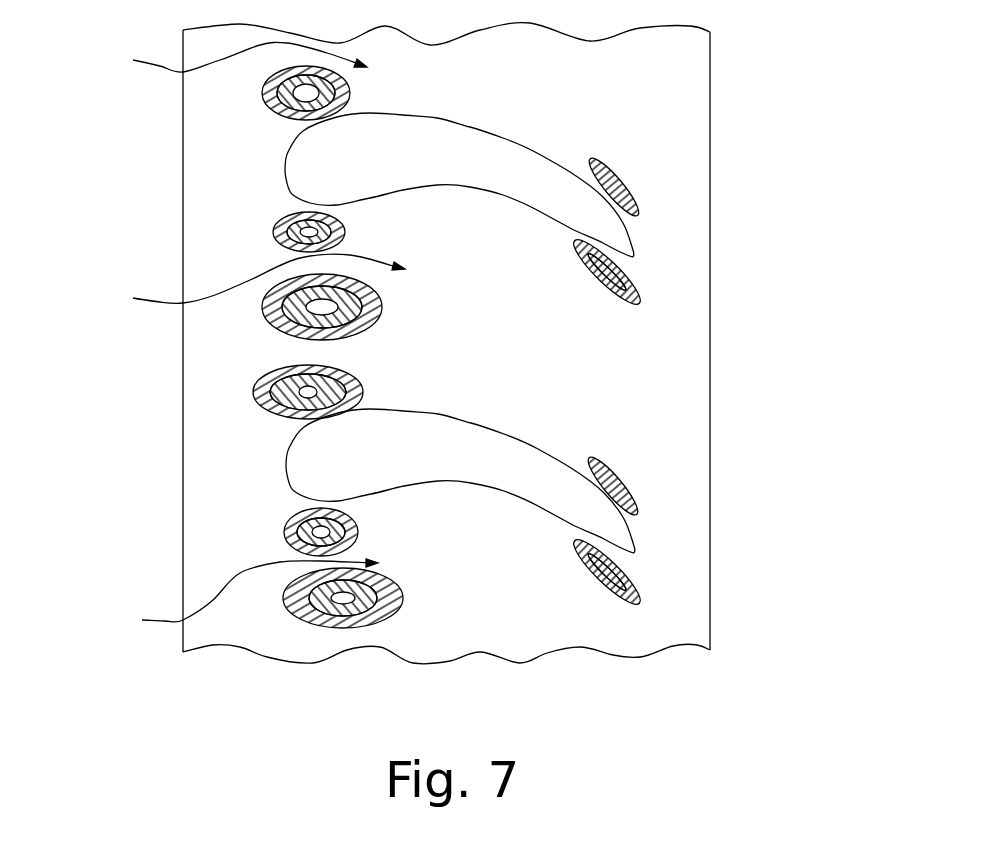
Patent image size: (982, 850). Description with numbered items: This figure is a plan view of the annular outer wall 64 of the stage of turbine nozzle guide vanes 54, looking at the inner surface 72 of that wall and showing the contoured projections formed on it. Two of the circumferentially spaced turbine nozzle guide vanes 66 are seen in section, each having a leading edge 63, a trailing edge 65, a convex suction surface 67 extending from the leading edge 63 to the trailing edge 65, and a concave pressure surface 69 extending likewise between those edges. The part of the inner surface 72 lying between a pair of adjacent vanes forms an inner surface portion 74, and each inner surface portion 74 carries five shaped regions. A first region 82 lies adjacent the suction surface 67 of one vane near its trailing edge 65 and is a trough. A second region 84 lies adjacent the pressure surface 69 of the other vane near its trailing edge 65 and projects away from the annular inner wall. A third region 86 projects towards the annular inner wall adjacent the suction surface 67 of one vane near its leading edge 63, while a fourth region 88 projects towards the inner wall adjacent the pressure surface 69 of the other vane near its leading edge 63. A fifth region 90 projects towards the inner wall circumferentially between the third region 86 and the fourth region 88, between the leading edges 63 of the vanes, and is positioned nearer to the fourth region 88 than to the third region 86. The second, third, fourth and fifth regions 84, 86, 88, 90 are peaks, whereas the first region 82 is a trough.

The stage of turbine nozzle guide vanes 54 is at (165, 136).
The leading edge 63 is at (286, 160).
The annular outer wall 64 is at (235, 363).
The trailing edge 65 is at (633, 257).
The turbine nozzle guide vanes 66 is at (527, 155).
The convex suction surface 67 is at (480, 117).
The pressure surface 69 is at (487, 190).
The inner surface 72 is at (233, 405).
The inner surface portion 74 is at (251, 337).
The first region 82 is at (636, 186).
The second region 84 is at (643, 287).
The third region 86 is at (263, 80).
The fourth region 88 is at (270, 228).
The fifth region 90 is at (275, 309).